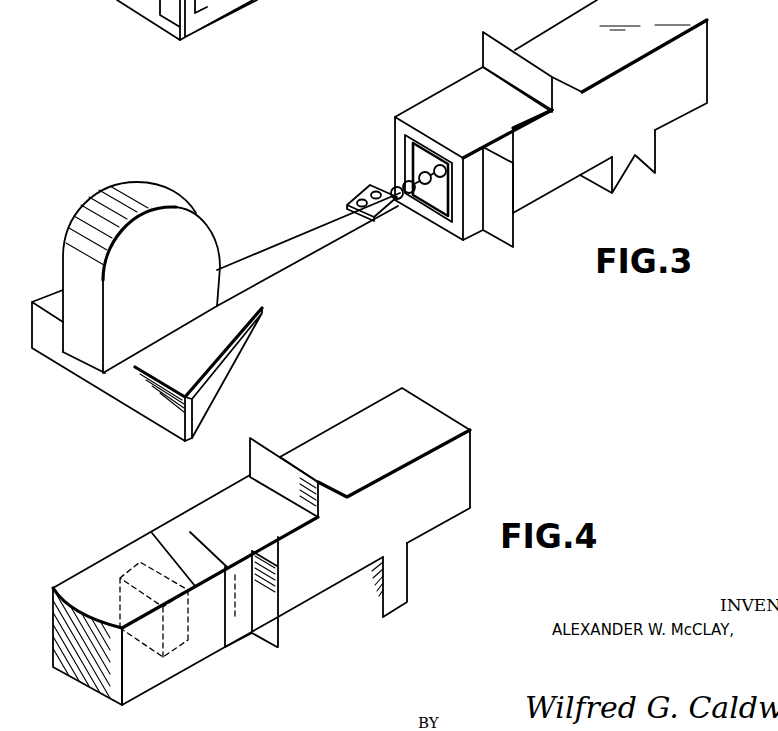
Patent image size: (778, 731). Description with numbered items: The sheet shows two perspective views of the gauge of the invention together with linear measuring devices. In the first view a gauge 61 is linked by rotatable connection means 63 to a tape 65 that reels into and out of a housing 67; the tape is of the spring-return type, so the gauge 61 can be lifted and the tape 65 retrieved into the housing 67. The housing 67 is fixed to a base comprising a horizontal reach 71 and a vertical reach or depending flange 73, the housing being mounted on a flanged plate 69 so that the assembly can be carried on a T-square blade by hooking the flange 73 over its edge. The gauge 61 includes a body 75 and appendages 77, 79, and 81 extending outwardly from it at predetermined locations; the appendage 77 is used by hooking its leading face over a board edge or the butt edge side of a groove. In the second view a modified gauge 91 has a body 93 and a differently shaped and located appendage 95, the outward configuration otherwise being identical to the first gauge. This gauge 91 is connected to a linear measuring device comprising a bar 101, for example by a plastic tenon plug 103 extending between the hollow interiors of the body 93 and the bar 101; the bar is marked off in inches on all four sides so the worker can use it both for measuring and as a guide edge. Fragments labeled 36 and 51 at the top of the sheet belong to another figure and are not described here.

In FIG. 3, the plate member (upper figure) 36 is at (118, 3).
In FIG. 3, the edge member (upper figure) 51 is at (209, 17).
In FIG. 3, the gauge 61 is at (470, 240).
In FIG. 3, the rotatable connection means 63 is at (407, 200).
In FIG. 3, the tape 65 is at (343, 202).
In FIG. 3, the housing 67 is at (200, 212).
In FIG. 3, the flanged plate 69 is at (186, 368).
In FIG. 3, the horizontal reach 71 is at (257, 318).
In FIG. 3, the depending flange 73 is at (191, 415).
In FIG. 3, the body 75 is at (708, 72).
In FIG. 3, the appendage 77 is at (647, 143).
In FIG. 3, the appendage 79 is at (523, 68).
In FIG. 4, the appendage 79 is at (327, 487).
In FIG. 3, the appendage 81 is at (502, 222).
In FIG. 4, the appendage 81 is at (267, 627).
In FIG. 4, the modified gauge 91 is at (211, 494).
In FIG. 4, the body 93 is at (373, 407).
In FIG. 4, the appendage 95 is at (398, 570).
In FIG. 4, the bar 101 is at (90, 573).
In FIG. 4, the plastic tenon plug 103 is at (152, 532).